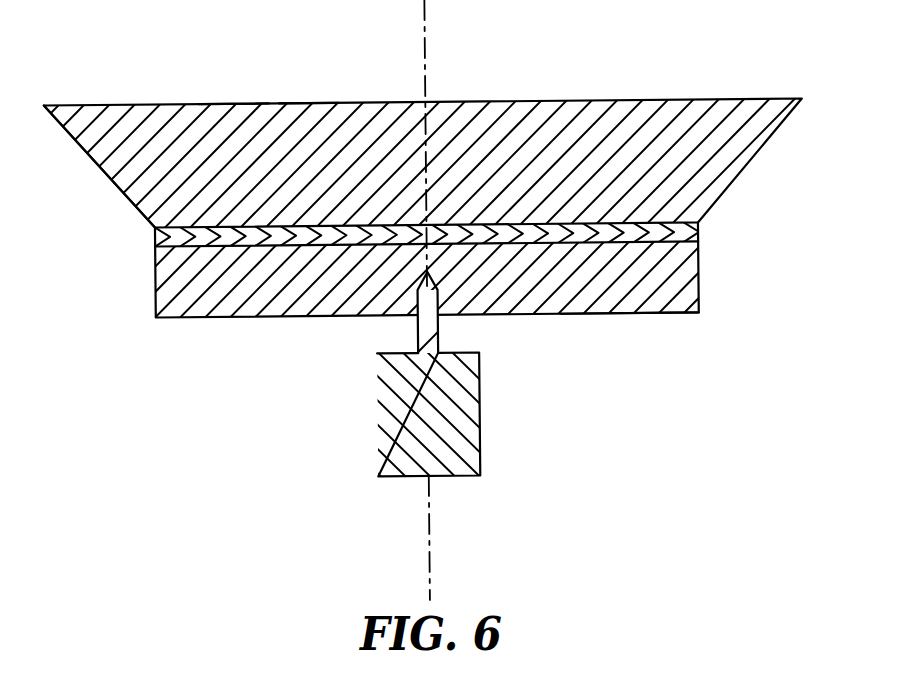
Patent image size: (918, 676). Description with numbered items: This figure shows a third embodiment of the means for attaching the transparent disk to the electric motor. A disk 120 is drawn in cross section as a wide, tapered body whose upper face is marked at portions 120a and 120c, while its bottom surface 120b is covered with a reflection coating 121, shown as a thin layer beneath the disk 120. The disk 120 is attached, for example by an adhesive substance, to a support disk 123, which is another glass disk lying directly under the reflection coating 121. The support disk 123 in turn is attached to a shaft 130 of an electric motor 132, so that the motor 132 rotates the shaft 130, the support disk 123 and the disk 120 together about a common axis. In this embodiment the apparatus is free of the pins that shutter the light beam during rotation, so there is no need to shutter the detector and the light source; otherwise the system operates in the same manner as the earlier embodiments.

The disk 120 is at (522, 102).
The first top surface portion 120a is at (223, 104).
The bottom surface 120b is at (307, 103).
The tapered side surface 120c is at (125, 105).
The reflection coating 121 is at (215, 318).
The support disk 123 is at (633, 313).
The shaft 130 is at (417, 327).
The electric motor 132 is at (463, 415).